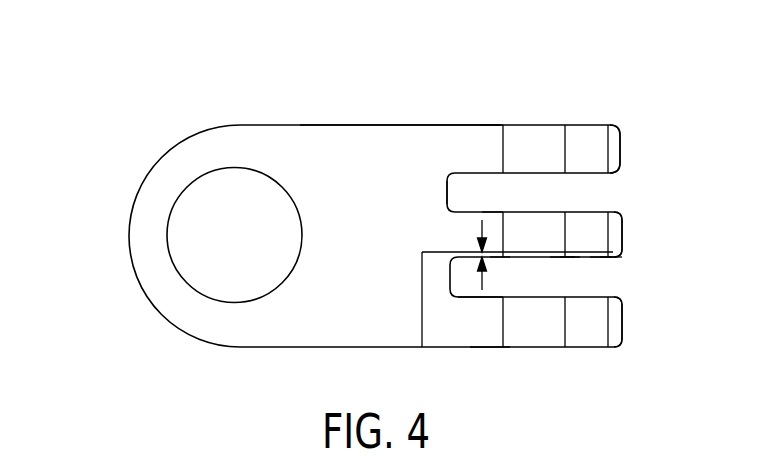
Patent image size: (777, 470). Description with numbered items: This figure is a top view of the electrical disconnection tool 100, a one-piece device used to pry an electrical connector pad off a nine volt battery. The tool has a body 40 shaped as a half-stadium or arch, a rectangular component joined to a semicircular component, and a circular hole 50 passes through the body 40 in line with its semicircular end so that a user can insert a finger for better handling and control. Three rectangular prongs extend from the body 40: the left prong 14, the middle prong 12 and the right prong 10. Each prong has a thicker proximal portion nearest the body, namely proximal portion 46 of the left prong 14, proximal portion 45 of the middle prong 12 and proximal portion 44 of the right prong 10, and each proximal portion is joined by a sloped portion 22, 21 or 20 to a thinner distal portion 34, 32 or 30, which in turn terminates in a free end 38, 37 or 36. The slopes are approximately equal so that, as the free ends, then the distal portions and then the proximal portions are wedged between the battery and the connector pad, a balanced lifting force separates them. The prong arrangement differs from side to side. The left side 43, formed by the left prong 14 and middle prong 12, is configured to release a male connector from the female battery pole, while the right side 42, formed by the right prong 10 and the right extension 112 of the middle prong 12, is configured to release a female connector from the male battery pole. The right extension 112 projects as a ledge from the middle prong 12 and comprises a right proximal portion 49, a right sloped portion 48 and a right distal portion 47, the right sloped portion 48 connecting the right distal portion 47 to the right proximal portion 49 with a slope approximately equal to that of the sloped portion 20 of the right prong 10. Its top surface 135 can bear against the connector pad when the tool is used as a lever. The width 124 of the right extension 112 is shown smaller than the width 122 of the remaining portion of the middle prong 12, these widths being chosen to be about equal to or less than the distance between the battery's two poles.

The electrical disconnection tool 100 is at (83, 61).
The circular hole 50 is at (178, 237).
The body 40 is at (350, 132).
The middle prong 12 is at (440, 230).
The left side 43 is at (425, 142).
The left prong 14 is at (458, 142).
The proximal portion of left prong 46 is at (488, 140).
The proximal portion of middle prong 45 is at (490, 220).
The width of right extension 124 is at (482, 222).
The right extension 112 is at (462, 262).
The right side 42 is at (435, 340).
The sloped portion of left prong 22 is at (542, 162).
The distal portion of left prong 34 is at (601, 162).
The sloped portion of middle prong 21 is at (542, 245).
The distal portion of middle prong 32 is at (601, 245).
The sloped portion of right prong 20 is at (542, 333).
The distal portion of right prong 30 is at (601, 333).
The free end of left prong 38 is at (622, 148).
The width of middle prong 122 is at (637, 253).
The free end of middle prong 37 is at (623, 245).
The free end of right prong 36 is at (625, 323).
The right prong 10 is at (497, 317).
The right proximal portion 49 is at (500, 255).
The proximal portion of right prong 44 is at (492, 340).
The right sloped portion 48 is at (562, 257).
The top surface of right extension 135 is at (569, 258).
The right distal portion 47 is at (597, 258).